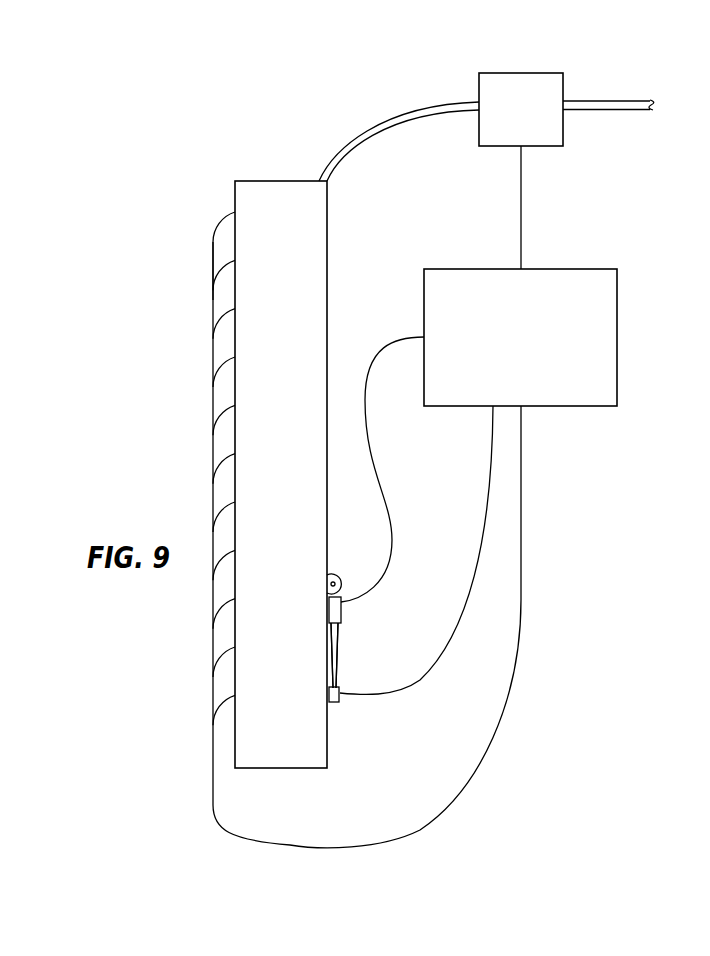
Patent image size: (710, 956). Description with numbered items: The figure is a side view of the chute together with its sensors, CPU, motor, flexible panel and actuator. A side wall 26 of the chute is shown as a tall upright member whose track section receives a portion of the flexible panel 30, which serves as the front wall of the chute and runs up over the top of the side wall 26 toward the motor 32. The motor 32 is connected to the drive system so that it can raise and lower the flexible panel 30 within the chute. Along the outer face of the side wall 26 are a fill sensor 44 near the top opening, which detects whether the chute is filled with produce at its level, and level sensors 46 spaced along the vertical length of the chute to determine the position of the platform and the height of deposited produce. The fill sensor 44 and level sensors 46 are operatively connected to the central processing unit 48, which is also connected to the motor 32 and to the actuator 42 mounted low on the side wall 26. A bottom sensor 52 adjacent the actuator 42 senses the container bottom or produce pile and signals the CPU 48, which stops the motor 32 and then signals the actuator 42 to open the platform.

The side wall 26 is at (275, 211).
The flexible panel 30 is at (382, 114).
The motor 32 is at (543, 147).
The central processing unit 48 is at (603, 336).
The fill sensor 44 is at (233, 210).
The level sensor 46 is at (233, 260).
The actuator 42 is at (340, 640).
The bottom sensor 52 is at (340, 697).